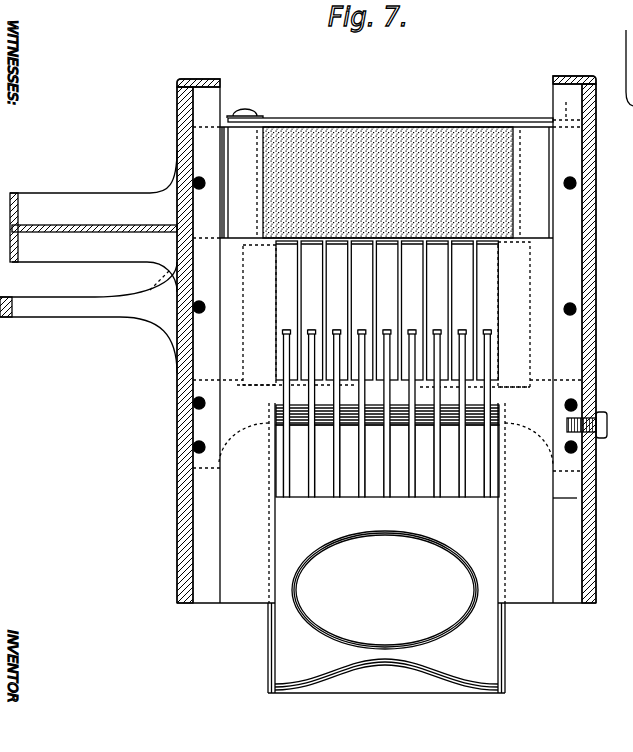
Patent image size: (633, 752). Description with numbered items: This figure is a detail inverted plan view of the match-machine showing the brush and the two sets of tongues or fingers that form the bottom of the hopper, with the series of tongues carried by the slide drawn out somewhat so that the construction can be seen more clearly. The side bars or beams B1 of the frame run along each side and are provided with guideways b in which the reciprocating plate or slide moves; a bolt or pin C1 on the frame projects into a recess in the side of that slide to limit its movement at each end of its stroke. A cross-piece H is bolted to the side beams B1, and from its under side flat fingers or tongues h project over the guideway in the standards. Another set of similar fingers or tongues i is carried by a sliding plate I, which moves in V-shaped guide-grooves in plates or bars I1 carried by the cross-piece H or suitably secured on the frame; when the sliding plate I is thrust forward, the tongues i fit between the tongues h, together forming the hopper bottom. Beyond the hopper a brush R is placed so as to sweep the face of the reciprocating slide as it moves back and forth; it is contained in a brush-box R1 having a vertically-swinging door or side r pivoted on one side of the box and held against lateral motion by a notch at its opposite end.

The side bars or beams B1 is at (388, 325).
The guideways b is at (387, 340).
The vertically-swinging door or side r is at (345, 118).
The brush R is at (388, 182).
The brush-box R1 is at (385, 182).
The plates or bars I1 is at (386, 422).
The flat fingers or tongues h is at (387, 310).
The cross-piece H is at (387, 406).
The sliding plate I is at (386, 548).
The fingers or tongues i is at (387, 402).
The bolt or pin C1 is at (597, 425).